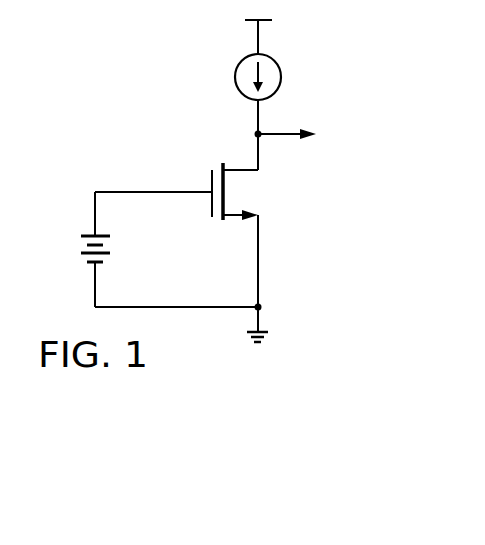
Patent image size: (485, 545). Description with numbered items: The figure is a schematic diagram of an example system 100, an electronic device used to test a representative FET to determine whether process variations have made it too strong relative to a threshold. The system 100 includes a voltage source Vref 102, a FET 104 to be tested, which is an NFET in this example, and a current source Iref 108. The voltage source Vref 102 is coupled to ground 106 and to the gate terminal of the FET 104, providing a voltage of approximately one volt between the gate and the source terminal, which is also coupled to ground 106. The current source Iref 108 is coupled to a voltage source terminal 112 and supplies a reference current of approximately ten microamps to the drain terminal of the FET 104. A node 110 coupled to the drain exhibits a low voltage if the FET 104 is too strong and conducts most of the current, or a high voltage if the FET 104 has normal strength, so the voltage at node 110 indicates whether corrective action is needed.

The system 100 is at (119, 60).
The voltage source Vref 102 is at (73, 247).
The FET 104 is at (206, 180).
The ground 106 is at (272, 334).
The current source Iref 108 is at (235, 77).
The node 110 is at (280, 137).
The voltage source terminal 112 is at (272, 20).